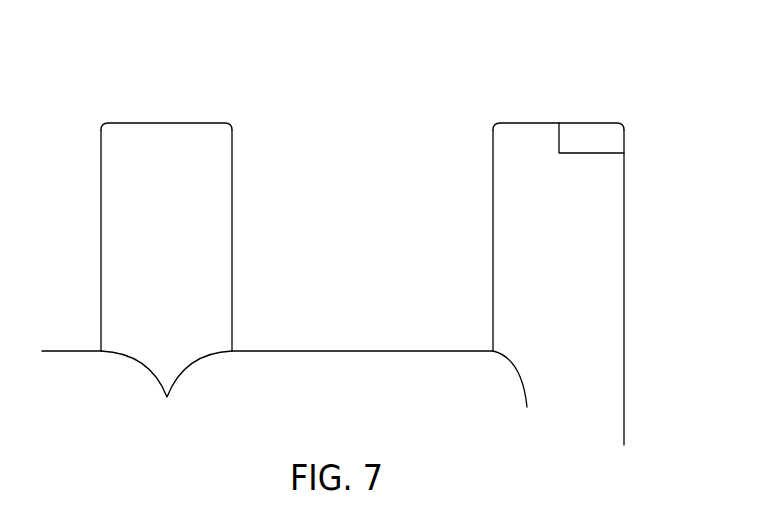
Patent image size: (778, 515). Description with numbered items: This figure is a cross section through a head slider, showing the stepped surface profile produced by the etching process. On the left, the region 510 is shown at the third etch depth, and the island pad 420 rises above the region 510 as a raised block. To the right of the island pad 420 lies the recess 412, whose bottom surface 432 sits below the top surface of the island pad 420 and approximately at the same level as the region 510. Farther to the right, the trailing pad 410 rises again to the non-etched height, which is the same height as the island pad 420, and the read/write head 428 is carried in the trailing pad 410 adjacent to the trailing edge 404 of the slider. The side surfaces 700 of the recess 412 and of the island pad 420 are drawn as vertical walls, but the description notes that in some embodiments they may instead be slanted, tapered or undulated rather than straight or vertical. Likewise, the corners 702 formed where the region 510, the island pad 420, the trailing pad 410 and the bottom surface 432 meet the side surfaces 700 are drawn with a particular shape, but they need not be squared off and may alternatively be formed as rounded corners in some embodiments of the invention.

The side surfaces 700 is at (101, 142).
The corners 702 is at (104, 124).
The island pad 420 is at (167, 123).
The trailing pad 410 is at (523, 123).
The recess 412 is at (377, 125).
The read/write head 428 is at (625, 135).
The trailing edge 404 is at (624, 257).
The region 510 is at (63, 351).
The bottom surface 432 is at (324, 351).